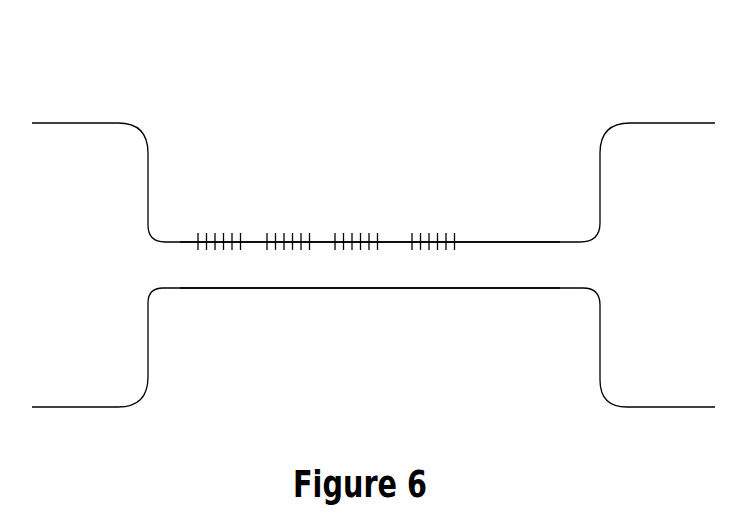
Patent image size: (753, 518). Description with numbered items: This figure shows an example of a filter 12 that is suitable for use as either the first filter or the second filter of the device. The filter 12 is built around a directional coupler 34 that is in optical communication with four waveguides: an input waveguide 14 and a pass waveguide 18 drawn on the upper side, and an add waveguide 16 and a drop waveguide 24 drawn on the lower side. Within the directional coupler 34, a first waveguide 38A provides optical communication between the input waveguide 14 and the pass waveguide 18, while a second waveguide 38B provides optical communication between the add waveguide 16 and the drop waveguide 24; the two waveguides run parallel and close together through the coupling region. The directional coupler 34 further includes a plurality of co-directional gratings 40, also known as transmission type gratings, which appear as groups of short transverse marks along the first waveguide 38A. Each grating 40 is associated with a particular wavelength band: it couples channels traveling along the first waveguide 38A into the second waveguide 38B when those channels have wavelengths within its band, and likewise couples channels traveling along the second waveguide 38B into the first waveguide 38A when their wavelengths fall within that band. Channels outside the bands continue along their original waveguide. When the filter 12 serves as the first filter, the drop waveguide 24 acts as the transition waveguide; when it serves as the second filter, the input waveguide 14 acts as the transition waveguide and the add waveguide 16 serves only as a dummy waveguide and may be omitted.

The filter 12 is at (367, 110).
The input waveguide 14 is at (88, 122).
The add waveguide 16 is at (63, 408).
The pass waveguide 18 is at (667, 123).
The drop waveguide 24 is at (643, 408).
The directional coupler 34 is at (343, 343).
The first waveguide 38A is at (522, 242).
The second waveguide 38B is at (535, 290).
The co-directional gratings 40 is at (213, 222).